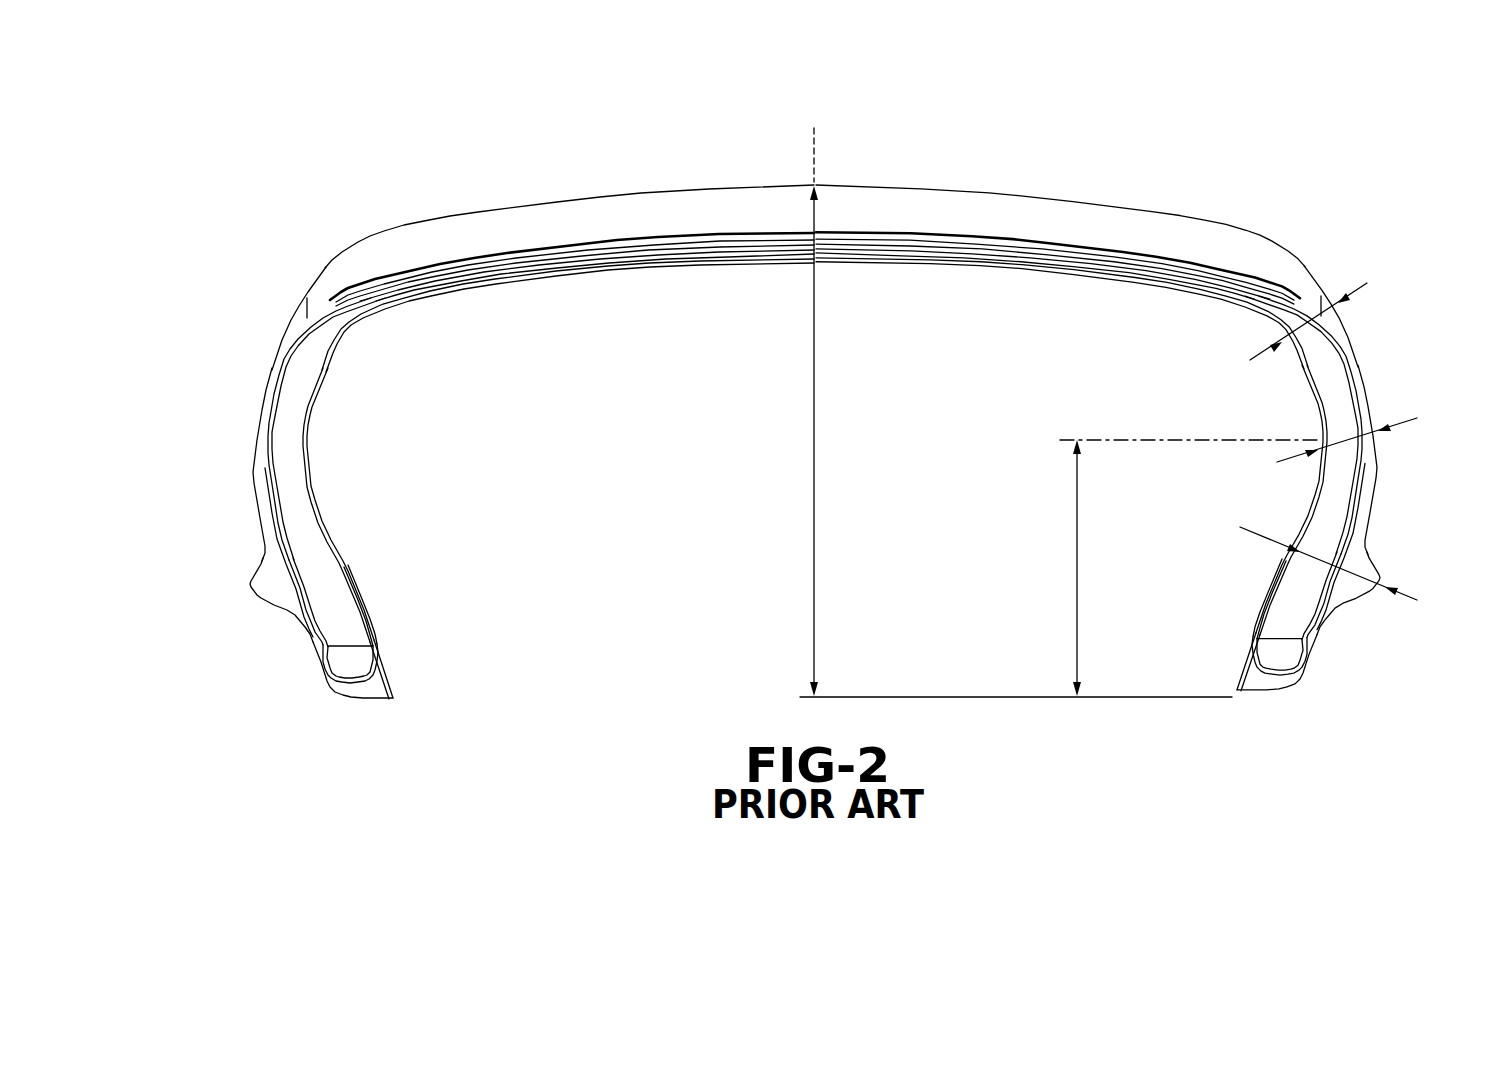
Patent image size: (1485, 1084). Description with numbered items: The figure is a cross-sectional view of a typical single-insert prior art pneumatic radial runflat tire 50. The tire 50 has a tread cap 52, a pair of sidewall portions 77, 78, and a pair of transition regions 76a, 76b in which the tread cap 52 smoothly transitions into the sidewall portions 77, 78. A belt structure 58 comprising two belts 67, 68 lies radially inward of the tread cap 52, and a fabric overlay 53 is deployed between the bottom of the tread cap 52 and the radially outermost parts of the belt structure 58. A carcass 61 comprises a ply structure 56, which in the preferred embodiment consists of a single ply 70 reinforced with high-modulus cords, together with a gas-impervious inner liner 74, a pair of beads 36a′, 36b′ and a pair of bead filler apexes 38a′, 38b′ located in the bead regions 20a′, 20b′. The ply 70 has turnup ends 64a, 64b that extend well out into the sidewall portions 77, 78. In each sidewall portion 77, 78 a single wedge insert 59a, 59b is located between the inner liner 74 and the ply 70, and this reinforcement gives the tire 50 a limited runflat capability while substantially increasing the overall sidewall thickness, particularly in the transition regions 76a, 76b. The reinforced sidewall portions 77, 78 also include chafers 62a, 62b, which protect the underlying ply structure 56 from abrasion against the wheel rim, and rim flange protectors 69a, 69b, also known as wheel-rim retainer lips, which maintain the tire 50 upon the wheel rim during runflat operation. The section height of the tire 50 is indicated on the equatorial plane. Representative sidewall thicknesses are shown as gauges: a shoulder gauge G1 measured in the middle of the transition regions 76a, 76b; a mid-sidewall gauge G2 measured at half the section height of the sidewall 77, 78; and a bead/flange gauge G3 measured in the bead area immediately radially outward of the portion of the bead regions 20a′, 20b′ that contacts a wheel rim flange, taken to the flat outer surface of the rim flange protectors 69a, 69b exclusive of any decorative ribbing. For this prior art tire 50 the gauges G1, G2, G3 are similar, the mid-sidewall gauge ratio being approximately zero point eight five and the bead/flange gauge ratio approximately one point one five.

The pneumatic radial runflat tire 50 is at (330, 170).
The tread cap 52 is at (888, 190).
The fabric overlay 53 is at (582, 240).
The ply structure 56 is at (640, 257).
The belt structure 58 is at (990, 243).
The carcass 61 is at (545, 262).
The belt 67 is at (1100, 256).
The belt 68 is at (1046, 240).
The single ply 70 is at (266, 446).
The inner liner 74 is at (310, 475).
The transition region 76a is at (300, 312).
The transition region 76b is at (1328, 312).
The sidewall portion 77 is at (257, 424).
The sidewall portion 78 is at (1375, 412).
The wedge insert 59a is at (300, 410).
The wedge insert 59b is at (1330, 407).
The turnup end 64a is at (259, 508).
The turnup end 64b is at (1370, 501).
The rim flange protector 69a is at (272, 566).
The rim flange protector 69b is at (1356, 562).
The chafer 62a is at (308, 627).
The chafer 62b is at (1322, 617).
The bead 36a′ is at (353, 660).
The bead 36b′ is at (1275, 657).
The bead region 20a′ is at (340, 632).
The bead region 20b′ is at (1290, 628).
The bead filler apex 38a′ is at (330, 602).
The bead filler apex 38b′ is at (1300, 598).
The shoulder gauge G1 is at (1250, 357).
The mid-sidewall gauge G2 is at (1347, 445).
The bead/flange gauge G3 is at (1250, 528).